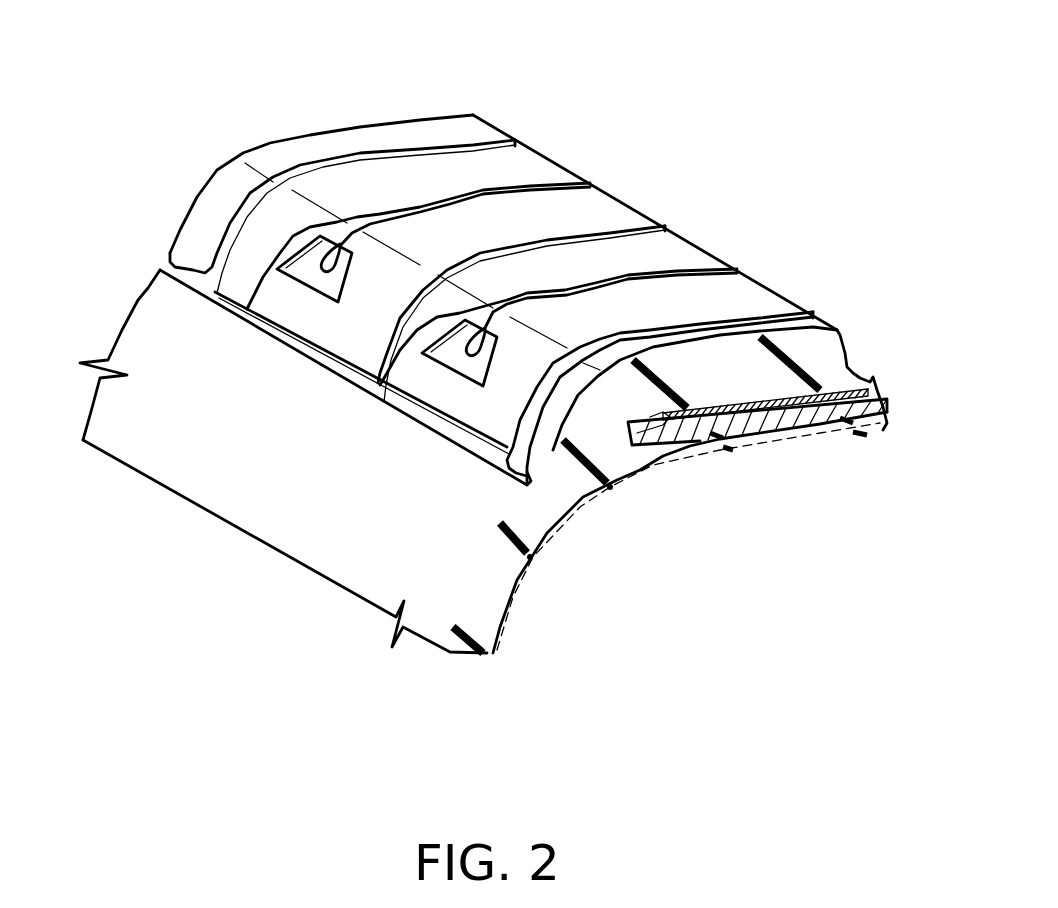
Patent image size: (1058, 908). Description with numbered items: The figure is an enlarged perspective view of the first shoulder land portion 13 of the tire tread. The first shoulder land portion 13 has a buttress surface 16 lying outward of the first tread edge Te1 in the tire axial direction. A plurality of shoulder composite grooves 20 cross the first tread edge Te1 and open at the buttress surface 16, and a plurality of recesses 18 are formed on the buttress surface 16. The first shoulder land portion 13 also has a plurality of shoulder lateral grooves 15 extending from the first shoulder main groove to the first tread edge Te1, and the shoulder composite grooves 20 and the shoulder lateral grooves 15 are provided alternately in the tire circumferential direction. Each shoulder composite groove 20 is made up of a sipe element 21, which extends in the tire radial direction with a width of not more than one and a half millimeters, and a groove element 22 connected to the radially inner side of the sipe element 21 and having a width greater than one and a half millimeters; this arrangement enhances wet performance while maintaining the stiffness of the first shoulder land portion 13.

The first shoulder land portion 13 is at (365, 103).
The shoulder lateral grooves 15 is at (421, 141).
The buttress surface 16 is at (206, 222).
The recesses 18 is at (283, 320).
The shoulder composite grooves 20 is at (397, 440).
The sipe element 21 is at (258, 257).
The groove element 22 is at (314, 283).
The first tread edge Te1 is at (260, 168).